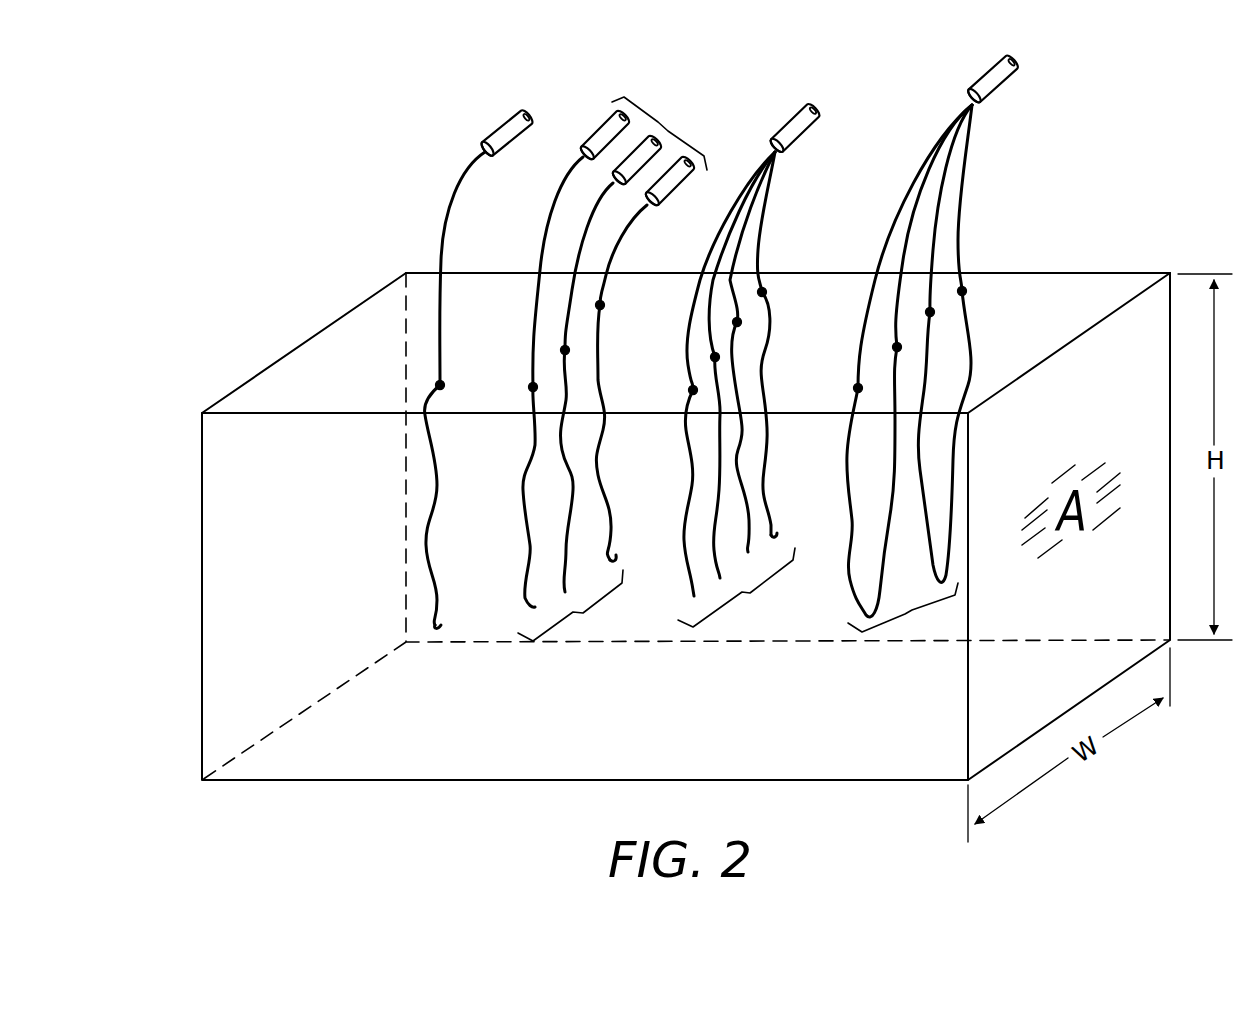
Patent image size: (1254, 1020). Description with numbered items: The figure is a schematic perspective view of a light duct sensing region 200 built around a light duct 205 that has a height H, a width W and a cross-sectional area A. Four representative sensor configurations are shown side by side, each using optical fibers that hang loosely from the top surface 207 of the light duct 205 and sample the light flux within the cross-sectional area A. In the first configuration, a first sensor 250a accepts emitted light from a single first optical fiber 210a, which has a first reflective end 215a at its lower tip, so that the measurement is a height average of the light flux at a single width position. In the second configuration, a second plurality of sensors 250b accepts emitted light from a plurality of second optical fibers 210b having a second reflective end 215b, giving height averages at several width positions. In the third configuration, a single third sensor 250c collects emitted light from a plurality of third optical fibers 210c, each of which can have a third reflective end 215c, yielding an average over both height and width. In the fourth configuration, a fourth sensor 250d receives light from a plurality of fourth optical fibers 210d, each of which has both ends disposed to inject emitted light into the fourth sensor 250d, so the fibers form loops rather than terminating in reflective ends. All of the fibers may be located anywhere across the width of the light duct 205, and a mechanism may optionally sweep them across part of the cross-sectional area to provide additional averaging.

The light duct sensing region 200 is at (276, 158).
The light duct 205 is at (325, 782).
The top surface 207 is at (1075, 293).
The single first optical fiber 210a is at (433, 507).
The plurality of second optical fibers 210b is at (583, 613).
The plurality of third optical fibers 210c is at (750, 595).
The plurality of fourth optical fibers 210d is at (912, 612).
The first reflective end 215a is at (446, 620).
The second reflective end 215b is at (618, 558).
The third reflective end 215c is at (780, 532).
The first sensor 250a is at (503, 123).
The second plurality of sensors 250b is at (662, 124).
The third sensor 250c is at (783, 125).
The fourth sensor 250d is at (1005, 89).